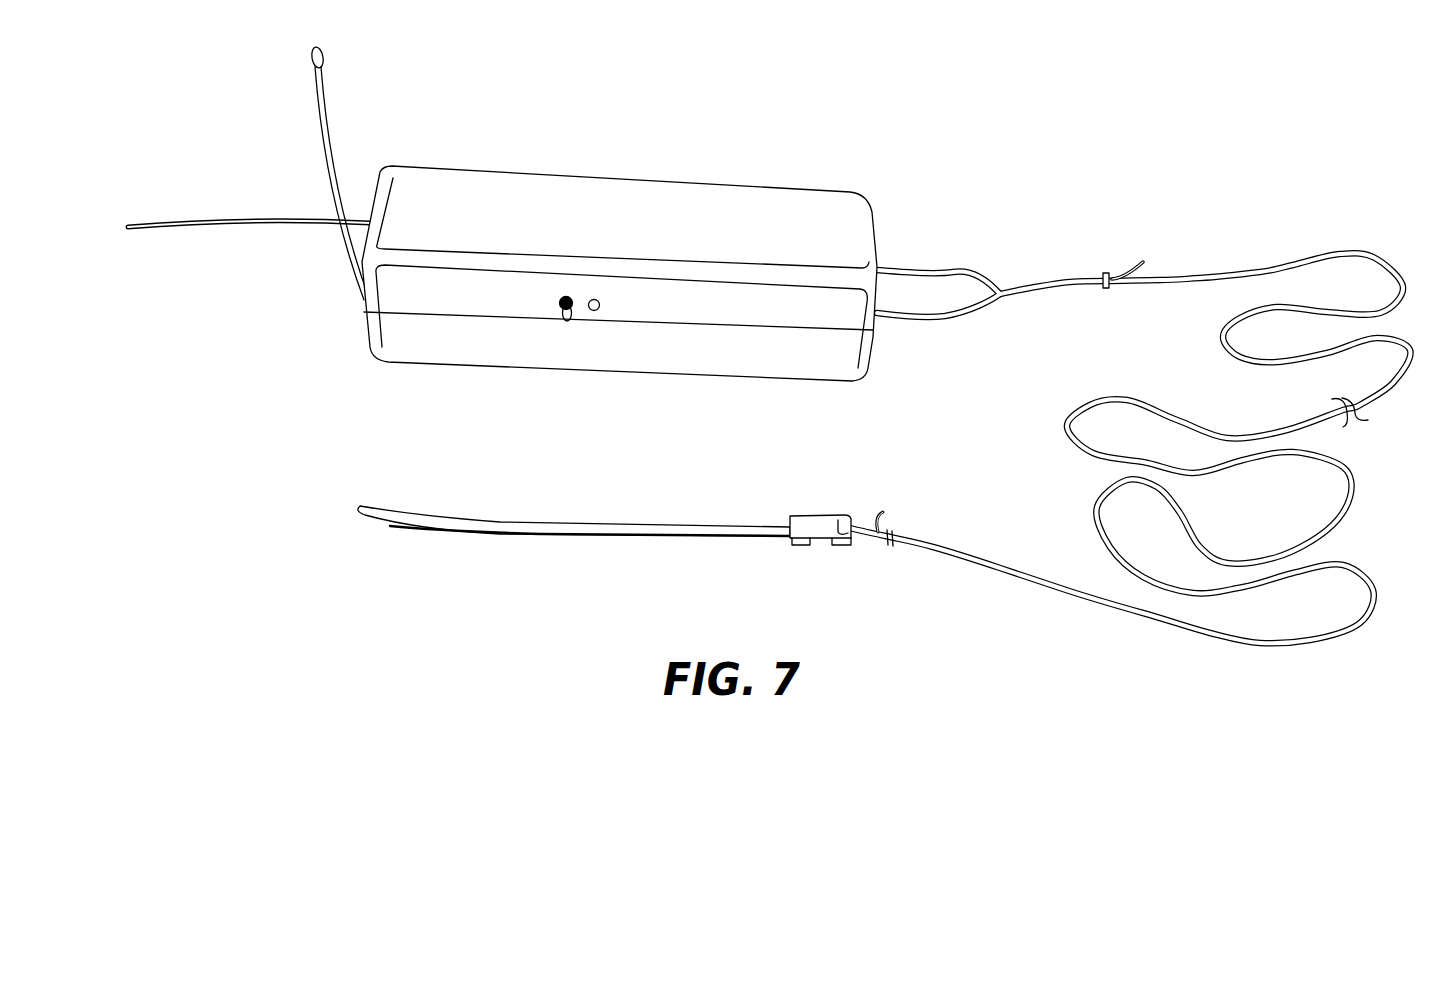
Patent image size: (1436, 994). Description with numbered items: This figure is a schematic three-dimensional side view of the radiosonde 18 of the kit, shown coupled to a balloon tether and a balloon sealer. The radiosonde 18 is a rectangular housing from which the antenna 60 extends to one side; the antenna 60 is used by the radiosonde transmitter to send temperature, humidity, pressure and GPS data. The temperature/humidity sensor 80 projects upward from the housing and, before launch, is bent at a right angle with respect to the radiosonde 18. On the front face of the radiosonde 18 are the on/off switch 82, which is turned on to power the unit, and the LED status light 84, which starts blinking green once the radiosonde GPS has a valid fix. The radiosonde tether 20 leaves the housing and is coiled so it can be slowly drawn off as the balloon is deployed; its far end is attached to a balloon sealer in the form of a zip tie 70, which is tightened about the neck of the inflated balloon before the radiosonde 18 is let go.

The radiosonde 18 is at (689, 213).
The radiosonde tether 20 is at (1238, 275).
The antenna 60 is at (200, 228).
The zip tie 70 is at (720, 527).
The temperature/humidity sensor 80 is at (328, 88).
The on/off switch 82 is at (567, 322).
The LED status light 84 is at (597, 313).